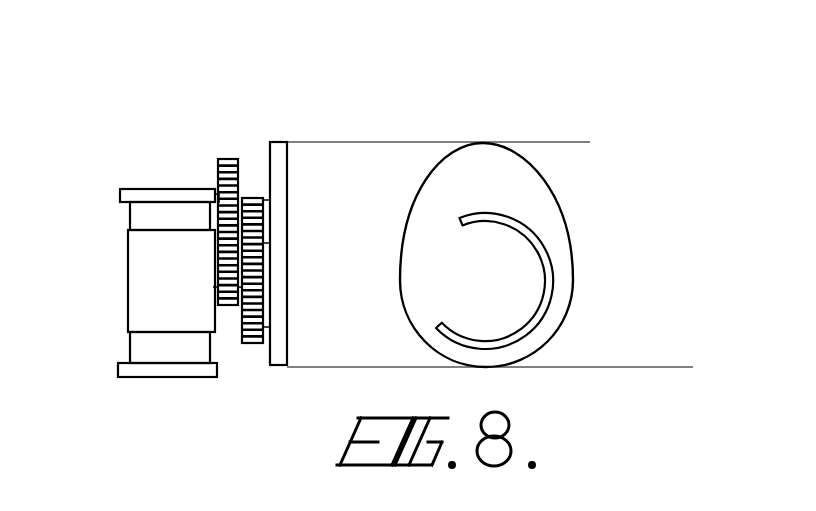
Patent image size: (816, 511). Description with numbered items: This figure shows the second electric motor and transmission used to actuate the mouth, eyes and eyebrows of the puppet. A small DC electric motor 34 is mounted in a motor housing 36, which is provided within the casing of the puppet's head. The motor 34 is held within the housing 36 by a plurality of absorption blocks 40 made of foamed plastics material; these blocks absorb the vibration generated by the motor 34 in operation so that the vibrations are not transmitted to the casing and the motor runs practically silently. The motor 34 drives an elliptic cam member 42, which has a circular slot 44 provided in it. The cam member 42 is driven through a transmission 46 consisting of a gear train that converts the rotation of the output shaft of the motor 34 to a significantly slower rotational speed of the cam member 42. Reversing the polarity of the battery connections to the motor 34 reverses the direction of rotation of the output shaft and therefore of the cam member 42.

The electric motor 34 is at (130, 277).
The motor housing 36 is at (149, 188).
The absorption blocks 40 is at (140, 213).
The elliptic cam member 42 is at (290, 162).
The circular slot 44 is at (570, 303).
The transmission 46 is at (247, 178).